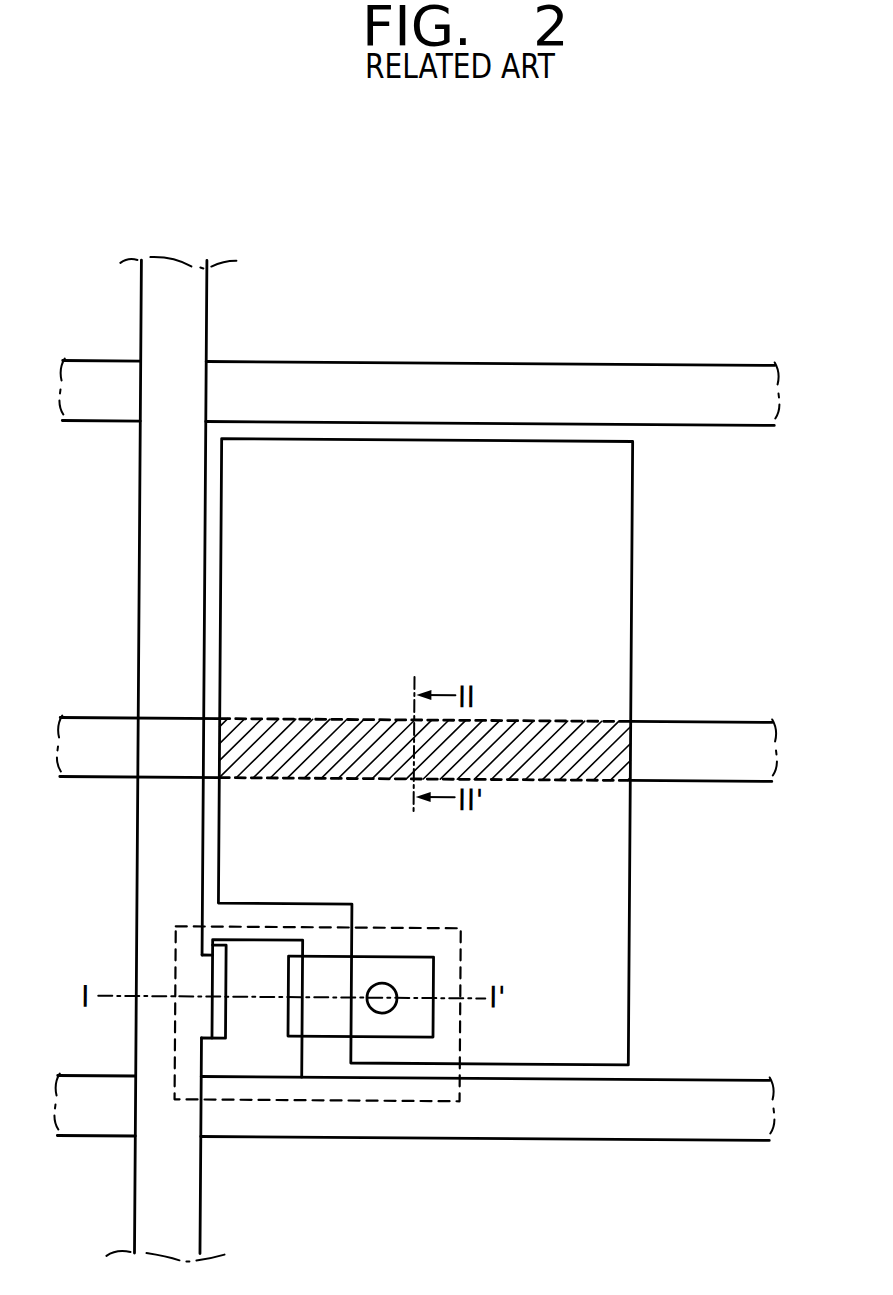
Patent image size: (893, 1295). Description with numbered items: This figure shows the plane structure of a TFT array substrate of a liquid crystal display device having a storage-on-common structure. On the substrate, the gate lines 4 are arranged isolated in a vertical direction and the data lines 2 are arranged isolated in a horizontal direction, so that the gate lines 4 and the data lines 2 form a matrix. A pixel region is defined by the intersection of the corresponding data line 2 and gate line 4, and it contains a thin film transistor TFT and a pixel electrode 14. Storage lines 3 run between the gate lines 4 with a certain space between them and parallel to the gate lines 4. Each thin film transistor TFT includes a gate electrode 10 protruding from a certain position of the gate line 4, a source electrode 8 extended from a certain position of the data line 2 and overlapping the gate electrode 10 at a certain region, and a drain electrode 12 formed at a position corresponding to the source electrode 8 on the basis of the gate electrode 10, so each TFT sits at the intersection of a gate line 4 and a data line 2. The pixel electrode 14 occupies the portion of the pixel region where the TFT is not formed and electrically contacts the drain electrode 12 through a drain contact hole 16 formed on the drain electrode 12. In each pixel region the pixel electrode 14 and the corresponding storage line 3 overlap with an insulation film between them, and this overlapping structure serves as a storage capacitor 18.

The data line 2 is at (187, 304).
The storage line 3 is at (703, 736).
The gate line 4 is at (647, 386).
The source electrode 8 is at (223, 954).
The gate electrode 10 is at (259, 956).
The drain electrode 12 is at (422, 972).
The pixel electrode 14 is at (606, 861).
The drain contact hole 16 is at (385, 981).
The storage capacitor 18 is at (516, 711).
The thin film transistor TFT is at (170, 954).